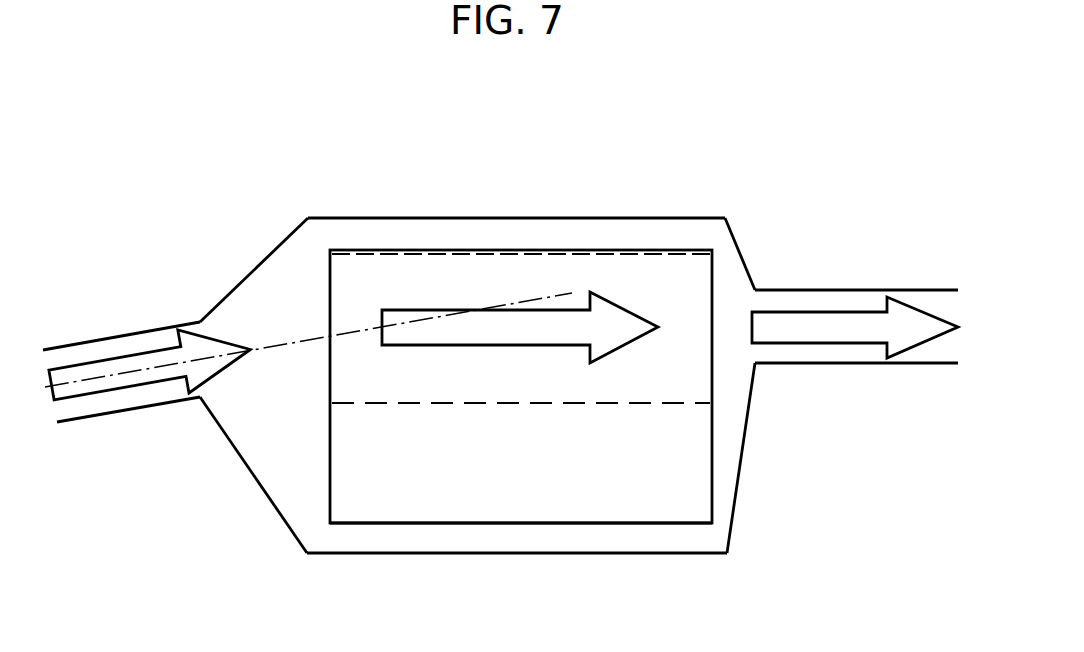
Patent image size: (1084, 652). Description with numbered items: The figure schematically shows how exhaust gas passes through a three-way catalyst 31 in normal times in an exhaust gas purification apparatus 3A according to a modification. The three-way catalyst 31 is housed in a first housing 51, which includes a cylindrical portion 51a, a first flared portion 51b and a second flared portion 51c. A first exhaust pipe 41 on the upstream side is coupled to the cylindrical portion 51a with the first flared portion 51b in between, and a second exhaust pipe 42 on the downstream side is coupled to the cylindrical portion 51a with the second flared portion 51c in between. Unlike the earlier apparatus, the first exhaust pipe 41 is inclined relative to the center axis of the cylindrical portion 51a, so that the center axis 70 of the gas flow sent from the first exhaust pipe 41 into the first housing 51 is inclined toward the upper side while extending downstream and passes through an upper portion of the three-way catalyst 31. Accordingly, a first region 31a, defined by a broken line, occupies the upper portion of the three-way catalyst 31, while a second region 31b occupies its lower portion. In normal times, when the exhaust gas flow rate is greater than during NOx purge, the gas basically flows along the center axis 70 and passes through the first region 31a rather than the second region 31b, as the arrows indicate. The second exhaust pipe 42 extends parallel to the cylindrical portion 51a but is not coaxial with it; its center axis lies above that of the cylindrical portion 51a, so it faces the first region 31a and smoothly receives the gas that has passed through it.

The exhaust gas purification apparatus 3A is at (232, 125).
The first housing 51 is at (328, 193).
The cylindrical portion 51a is at (383, 218).
The first flared portion 51b is at (283, 243).
The second flared portion 51c is at (740, 245).
The first exhaust pipe 41 is at (120, 333).
The second exhaust pipe 42 is at (866, 290).
The three-way catalyst 31 is at (593, 250).
The first region 31a is at (512, 297).
The second region 31b is at (517, 475).
The center axis 70 is at (277, 347).